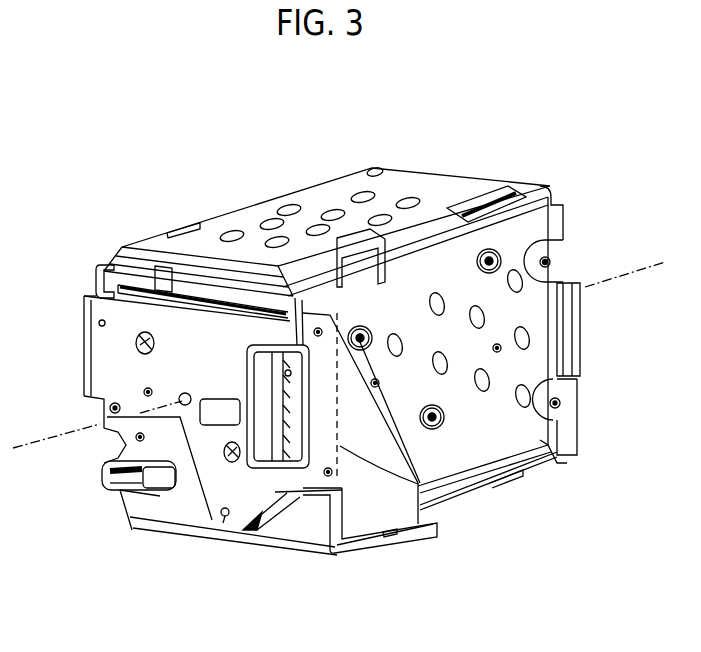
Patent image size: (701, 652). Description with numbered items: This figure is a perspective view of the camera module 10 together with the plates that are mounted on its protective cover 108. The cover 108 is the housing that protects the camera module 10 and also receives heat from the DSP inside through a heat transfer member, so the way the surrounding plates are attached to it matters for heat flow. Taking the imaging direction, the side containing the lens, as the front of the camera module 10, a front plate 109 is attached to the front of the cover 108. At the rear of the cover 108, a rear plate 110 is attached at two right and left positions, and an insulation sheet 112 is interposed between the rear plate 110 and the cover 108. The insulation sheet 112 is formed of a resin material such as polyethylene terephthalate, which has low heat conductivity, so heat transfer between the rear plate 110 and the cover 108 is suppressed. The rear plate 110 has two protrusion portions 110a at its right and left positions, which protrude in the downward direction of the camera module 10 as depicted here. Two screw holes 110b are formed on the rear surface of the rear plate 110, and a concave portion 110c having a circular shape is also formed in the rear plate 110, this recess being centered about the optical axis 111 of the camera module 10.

The camera module 10 is at (257, 200).
The cover 108 is at (438, 172).
The front plate 109 is at (583, 343).
The rear plate 110 is at (173, 277).
The protrusion portions 110a is at (415, 553).
The screw holes 110b is at (93, 297).
The concave portion 110c is at (182, 405).
The optical axis 111 is at (43, 437).
The insulation sheet 112 is at (477, 490).